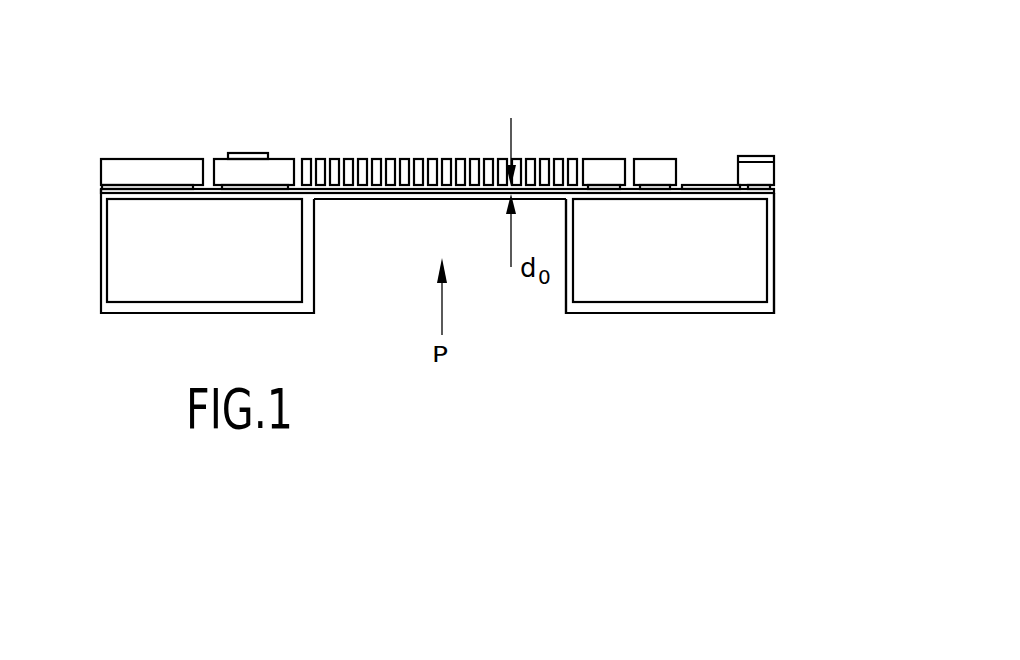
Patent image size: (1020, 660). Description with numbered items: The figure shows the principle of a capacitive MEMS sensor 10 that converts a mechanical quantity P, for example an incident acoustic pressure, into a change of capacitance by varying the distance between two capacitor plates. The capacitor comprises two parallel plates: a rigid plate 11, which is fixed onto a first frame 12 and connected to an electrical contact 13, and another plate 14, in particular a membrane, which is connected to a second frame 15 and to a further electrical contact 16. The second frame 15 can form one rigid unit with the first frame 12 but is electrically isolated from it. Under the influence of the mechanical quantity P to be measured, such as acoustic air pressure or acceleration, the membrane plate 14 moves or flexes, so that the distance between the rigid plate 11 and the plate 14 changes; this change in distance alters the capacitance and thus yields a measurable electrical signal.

The capacitive MEMS sensor 10 is at (781, 66).
The rigid plate 11 is at (372, 170).
The first frame 12 is at (108, 169).
The electrical contact 13 is at (256, 153).
The plate (membrane) 14 is at (420, 197).
The second frame 15 is at (750, 258).
The electrical contact 16 is at (720, 185).